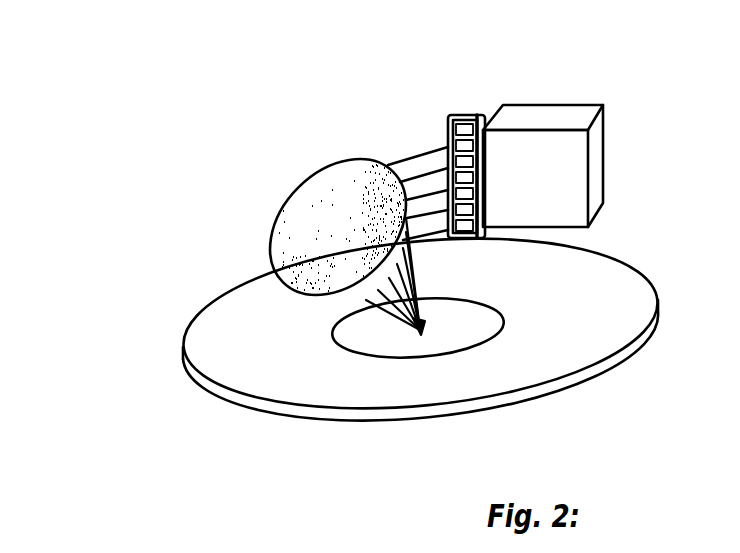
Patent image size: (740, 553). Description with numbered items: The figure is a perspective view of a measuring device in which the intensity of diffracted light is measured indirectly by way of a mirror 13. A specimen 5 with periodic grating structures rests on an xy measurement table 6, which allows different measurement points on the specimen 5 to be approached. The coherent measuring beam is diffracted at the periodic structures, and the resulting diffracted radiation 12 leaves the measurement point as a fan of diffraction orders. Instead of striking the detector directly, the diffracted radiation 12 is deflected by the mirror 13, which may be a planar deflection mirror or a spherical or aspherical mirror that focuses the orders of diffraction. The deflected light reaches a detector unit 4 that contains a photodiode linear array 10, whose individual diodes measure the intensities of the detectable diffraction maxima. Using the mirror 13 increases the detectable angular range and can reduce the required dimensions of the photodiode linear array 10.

The detector unit 4 is at (602, 122).
The specimen 5 is at (365, 343).
The xy measurement table 6 is at (603, 375).
The photodiode linear array 10 is at (450, 112).
The diffracted radiation 12 is at (437, 275).
The mirror 13 is at (307, 210).